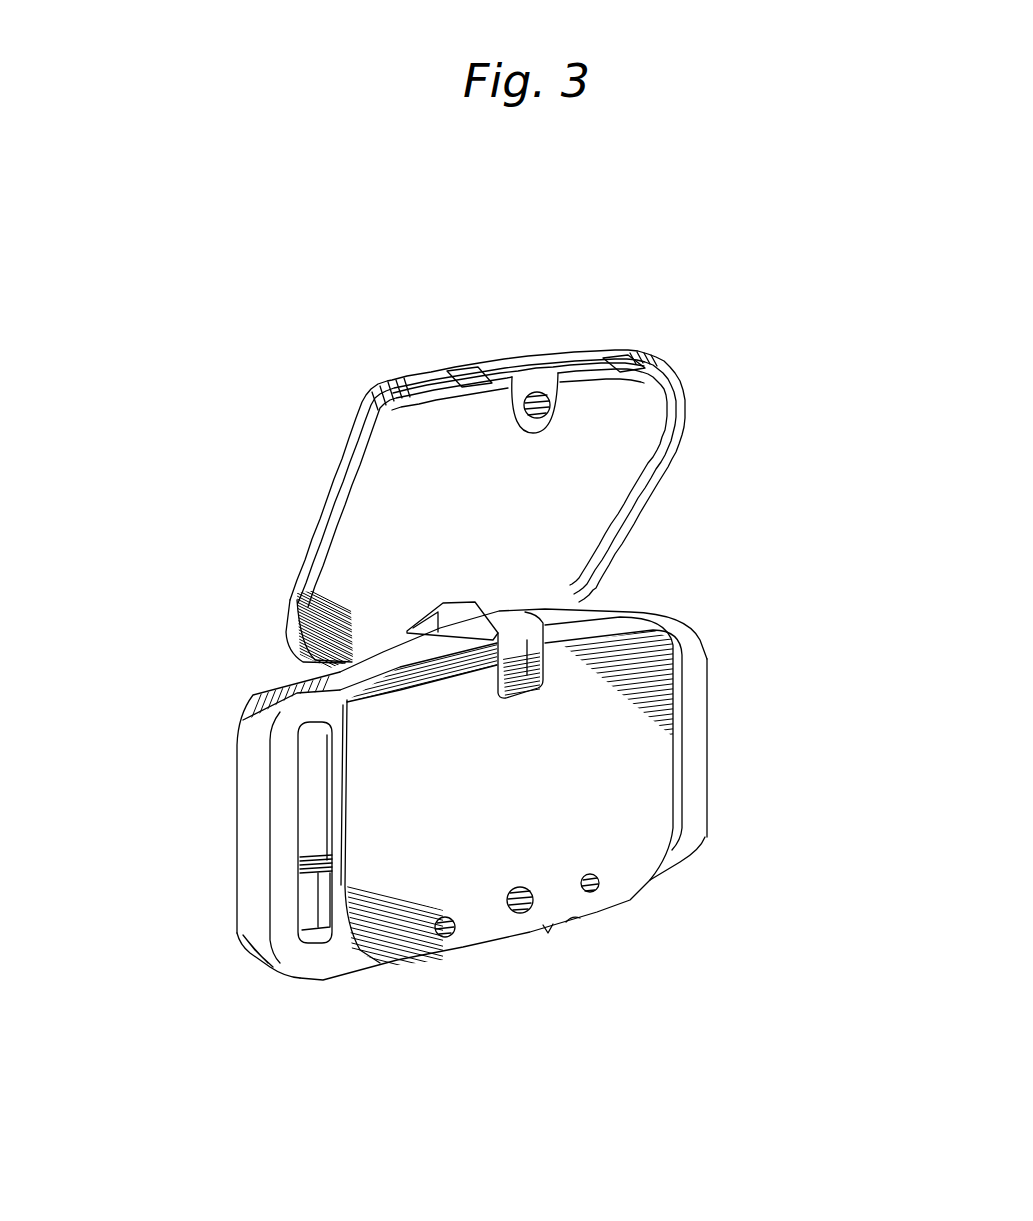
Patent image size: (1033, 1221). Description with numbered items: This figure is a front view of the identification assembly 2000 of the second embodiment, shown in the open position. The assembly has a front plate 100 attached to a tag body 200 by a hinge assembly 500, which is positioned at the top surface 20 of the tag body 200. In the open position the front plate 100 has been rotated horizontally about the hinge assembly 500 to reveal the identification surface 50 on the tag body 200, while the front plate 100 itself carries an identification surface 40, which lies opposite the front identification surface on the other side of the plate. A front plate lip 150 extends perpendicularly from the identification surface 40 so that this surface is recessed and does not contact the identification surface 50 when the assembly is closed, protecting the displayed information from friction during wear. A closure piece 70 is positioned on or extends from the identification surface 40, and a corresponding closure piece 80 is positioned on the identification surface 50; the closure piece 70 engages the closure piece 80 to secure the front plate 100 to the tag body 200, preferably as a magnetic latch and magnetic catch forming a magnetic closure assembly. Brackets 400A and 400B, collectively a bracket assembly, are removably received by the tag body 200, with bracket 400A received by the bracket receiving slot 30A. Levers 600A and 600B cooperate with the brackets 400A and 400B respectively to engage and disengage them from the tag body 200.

The identification assembly 2000 is at (148, 305).
The front plate 100 is at (650, 503).
The closure piece 70 is at (510, 412).
The front plate lip 150 is at (665, 377).
The identification surface 40 is at (520, 575).
The tag body 200 is at (673, 677).
The top surface 20 is at (423, 643).
The bracket receiving slot 30A is at (330, 667).
The identification surface 50 is at (648, 777).
The bracket 400A is at (250, 790).
The bracket 400B is at (700, 837).
The hinge assembly 500 is at (477, 628).
The closure piece 80 is at (515, 915).
The lever 600A is at (443, 957).
The lever 600B is at (570, 920).